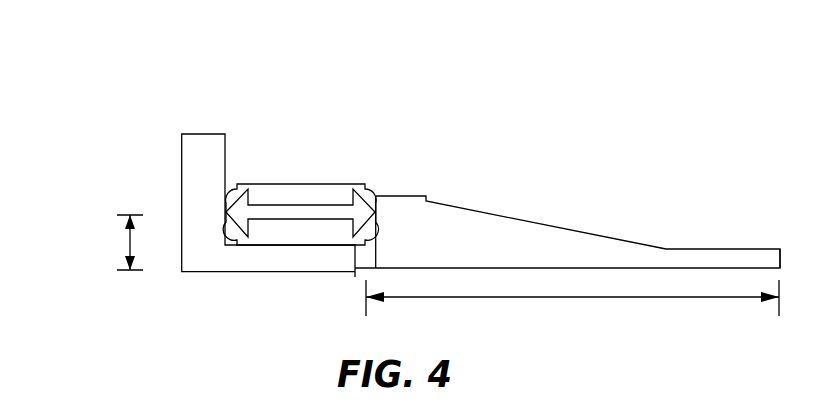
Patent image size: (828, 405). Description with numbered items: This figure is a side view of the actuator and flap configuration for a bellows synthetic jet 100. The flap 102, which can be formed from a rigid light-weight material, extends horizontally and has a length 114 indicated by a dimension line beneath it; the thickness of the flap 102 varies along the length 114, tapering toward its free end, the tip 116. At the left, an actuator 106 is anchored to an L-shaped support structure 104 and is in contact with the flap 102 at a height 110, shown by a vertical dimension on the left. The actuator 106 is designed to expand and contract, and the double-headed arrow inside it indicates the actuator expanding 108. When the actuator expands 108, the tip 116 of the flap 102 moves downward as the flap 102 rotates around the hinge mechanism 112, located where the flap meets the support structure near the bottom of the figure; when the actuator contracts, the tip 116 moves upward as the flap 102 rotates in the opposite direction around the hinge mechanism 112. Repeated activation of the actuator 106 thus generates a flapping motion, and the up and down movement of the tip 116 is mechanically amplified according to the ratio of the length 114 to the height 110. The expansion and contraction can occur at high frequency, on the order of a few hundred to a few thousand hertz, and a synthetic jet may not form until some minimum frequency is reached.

The bellows synthetic jet 100 is at (98, 46).
The flap 102 is at (537, 265).
The support structure 104 is at (196, 158).
The actuator 106 is at (276, 184).
The actuator expansion 108 is at (315, 215).
The height 110 is at (128, 240).
The hinge mechanism 112 is at (355, 277).
The length 114 is at (578, 299).
The tip 116 is at (767, 262).